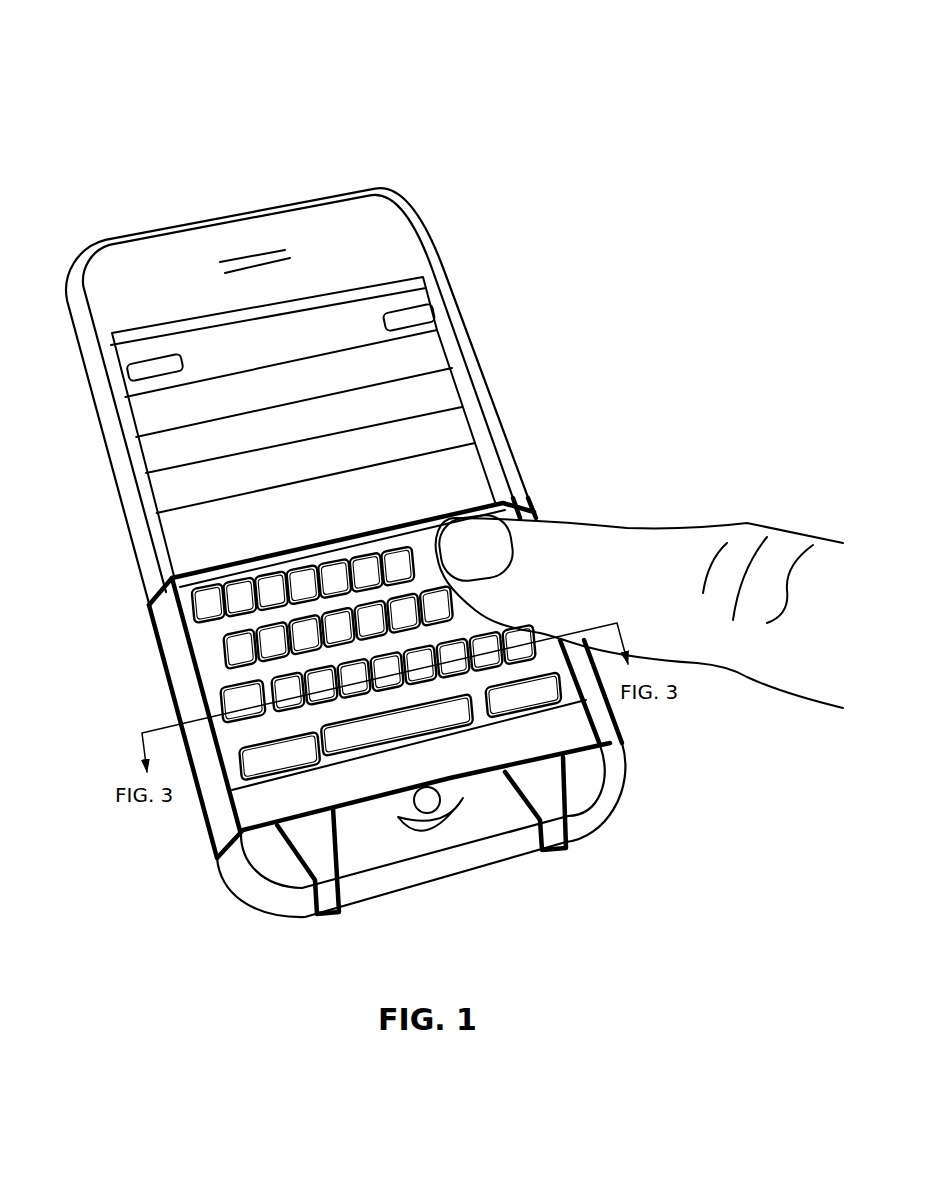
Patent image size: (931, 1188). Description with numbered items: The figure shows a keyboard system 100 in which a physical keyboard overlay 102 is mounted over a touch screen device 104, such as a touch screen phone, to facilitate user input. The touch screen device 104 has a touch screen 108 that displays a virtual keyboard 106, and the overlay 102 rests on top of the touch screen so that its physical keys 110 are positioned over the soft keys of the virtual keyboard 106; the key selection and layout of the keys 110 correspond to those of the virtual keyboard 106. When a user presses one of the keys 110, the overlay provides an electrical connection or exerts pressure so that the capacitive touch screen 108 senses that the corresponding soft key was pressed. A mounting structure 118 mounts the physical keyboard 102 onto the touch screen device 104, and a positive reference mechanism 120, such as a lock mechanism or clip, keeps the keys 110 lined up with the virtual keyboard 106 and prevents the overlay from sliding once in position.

The keyboard system 100 is at (487, 96).
The physical keyboard overlay 102 is at (528, 511).
The touch screen device 104 is at (432, 227).
The virtual keyboard 106 is at (452, 504).
The touch screen 108 is at (197, 543).
The keys 110 is at (226, 653).
The mounting structure 118 is at (288, 850).
The positive reference mechanism 120 is at (575, 828).